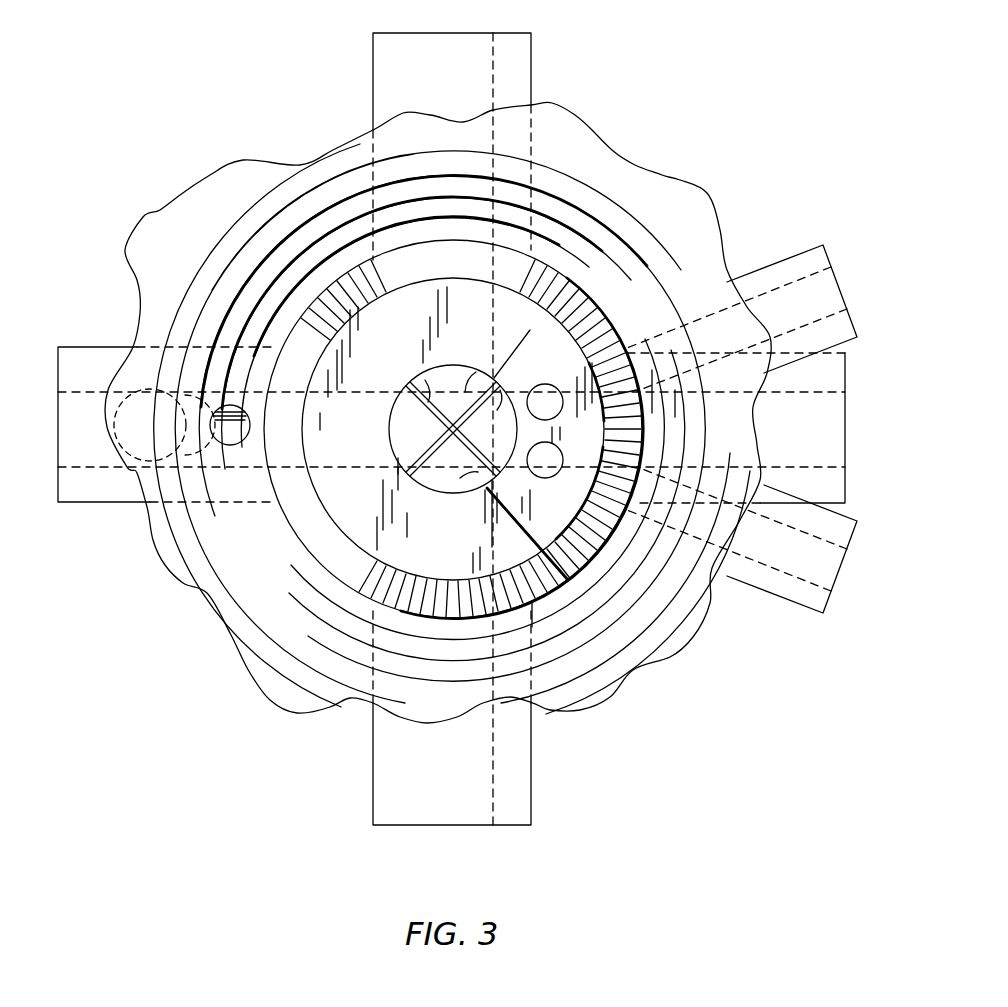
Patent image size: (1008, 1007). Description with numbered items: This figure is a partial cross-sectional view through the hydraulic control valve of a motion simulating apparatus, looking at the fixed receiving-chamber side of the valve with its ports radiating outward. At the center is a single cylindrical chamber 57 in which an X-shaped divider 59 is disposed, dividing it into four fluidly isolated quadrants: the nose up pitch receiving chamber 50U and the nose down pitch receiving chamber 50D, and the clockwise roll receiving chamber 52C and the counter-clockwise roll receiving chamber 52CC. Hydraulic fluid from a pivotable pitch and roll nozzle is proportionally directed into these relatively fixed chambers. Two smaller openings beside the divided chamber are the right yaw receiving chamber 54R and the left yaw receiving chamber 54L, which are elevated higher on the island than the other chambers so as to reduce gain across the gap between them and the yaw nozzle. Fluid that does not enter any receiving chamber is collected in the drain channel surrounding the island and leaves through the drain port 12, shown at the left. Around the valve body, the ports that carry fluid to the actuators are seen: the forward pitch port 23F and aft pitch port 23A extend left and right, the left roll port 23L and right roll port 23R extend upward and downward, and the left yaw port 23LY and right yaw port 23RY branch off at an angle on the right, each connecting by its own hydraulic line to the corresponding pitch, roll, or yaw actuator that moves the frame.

The drain port 12 is at (112, 396).
The left roll port 23L is at (531, 62).
The right roll port 23R is at (432, 825).
The forward pitch port 23F is at (85, 502).
The aft pitch port 23A is at (845, 423).
The left yaw port 23LY is at (823, 245).
The right yaw port 23RY is at (806, 607).
The single cylindrical chamber 57 is at (391, 436).
The X-shaped divider 59 is at (425, 380).
The clockwise roll receiving chamber 52C is at (476, 372).
The counter-clockwise roll receiving chamber 52CC is at (460, 478).
The nose down pitch receiving chamber 50D is at (497, 410).
The nose up pitch receiving chamber 50U is at (398, 466).
The right yaw receiving chamber 54R is at (556, 416).
The left yaw receiving chamber 54L is at (548, 462).